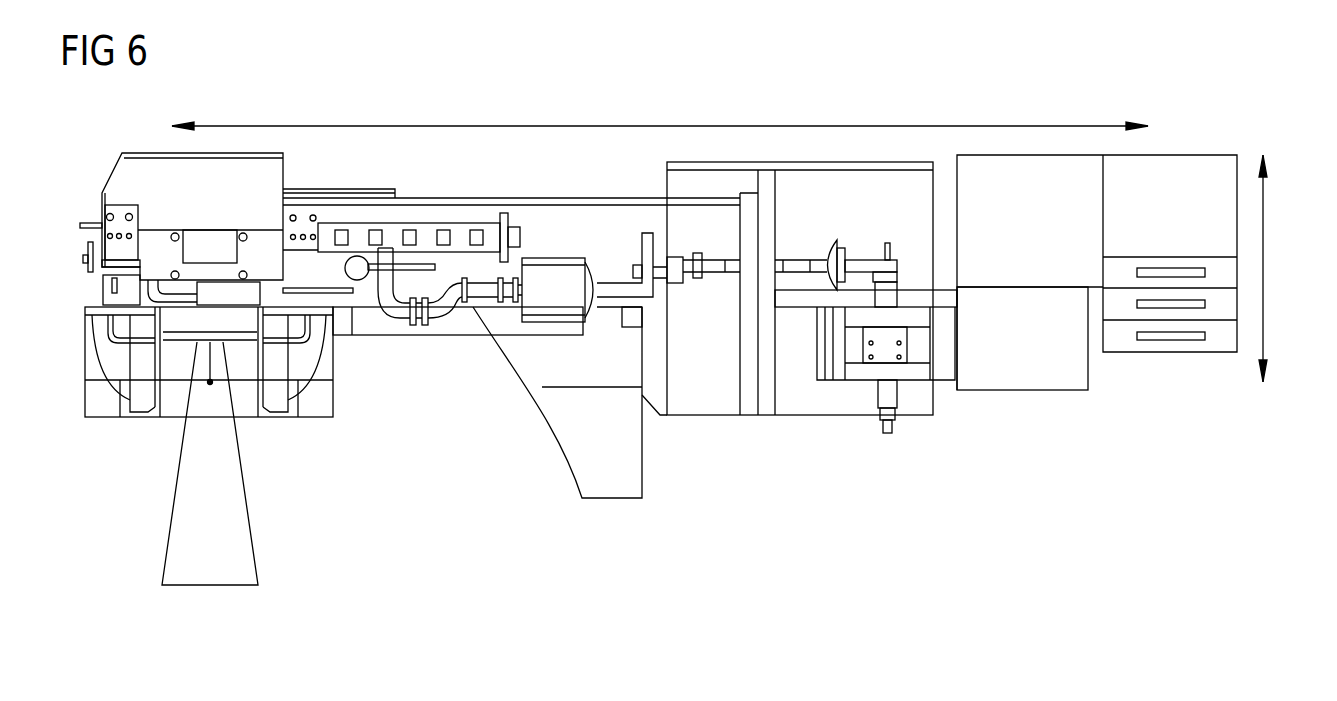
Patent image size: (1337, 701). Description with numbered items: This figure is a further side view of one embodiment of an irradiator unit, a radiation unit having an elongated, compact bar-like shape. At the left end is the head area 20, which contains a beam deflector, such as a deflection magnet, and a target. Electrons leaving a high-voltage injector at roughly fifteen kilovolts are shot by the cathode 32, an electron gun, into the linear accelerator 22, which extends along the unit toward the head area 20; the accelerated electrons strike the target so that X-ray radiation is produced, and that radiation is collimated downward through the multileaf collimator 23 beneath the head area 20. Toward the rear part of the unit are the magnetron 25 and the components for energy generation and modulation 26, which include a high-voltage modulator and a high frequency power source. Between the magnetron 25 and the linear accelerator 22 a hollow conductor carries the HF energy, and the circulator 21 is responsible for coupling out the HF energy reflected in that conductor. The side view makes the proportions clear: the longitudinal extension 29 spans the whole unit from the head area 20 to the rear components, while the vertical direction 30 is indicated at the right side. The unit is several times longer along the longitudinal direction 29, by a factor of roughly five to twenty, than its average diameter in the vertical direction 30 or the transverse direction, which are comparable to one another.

The head area 20 is at (125, 187).
The circulator 21 is at (528, 287).
The linear accelerator 22 is at (428, 236).
The multileaf collimator 23 is at (245, 335).
The magnetron 25 is at (893, 352).
The components for energy generation and modulation 26 is at (1185, 182).
The longitudinal extension 29 is at (660, 125).
The vertical direction 30 is at (1263, 268).
The cathode 32 is at (515, 235).